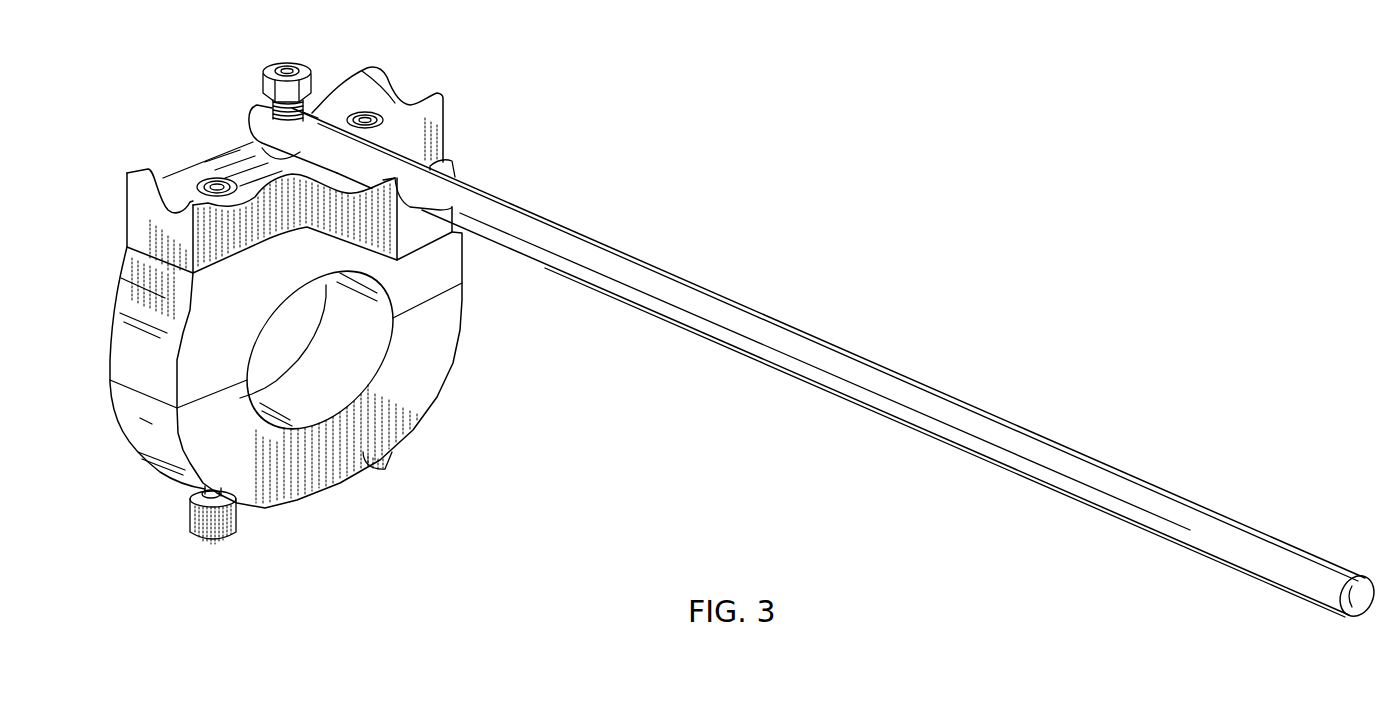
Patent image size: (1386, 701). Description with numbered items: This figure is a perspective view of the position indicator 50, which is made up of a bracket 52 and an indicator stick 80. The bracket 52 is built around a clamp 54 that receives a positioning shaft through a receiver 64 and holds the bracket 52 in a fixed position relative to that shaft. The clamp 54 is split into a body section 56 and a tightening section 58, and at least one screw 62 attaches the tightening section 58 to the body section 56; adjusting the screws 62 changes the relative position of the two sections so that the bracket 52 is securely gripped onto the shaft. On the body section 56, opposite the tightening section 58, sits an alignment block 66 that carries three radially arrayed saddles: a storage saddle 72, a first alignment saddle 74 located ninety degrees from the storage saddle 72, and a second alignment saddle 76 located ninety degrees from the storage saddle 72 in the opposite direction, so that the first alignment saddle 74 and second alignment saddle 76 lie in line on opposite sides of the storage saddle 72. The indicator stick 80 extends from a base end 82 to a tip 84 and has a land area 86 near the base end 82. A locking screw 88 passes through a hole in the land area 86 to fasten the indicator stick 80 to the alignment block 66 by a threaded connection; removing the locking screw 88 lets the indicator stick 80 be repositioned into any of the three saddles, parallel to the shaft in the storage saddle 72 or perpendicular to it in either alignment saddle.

The position indicator 50 is at (874, 199).
The bracket 52 is at (455, 170).
The clamp 54 is at (430, 348).
The body section 56 is at (120, 328).
The tightening section 58 is at (140, 437).
The screw 62 is at (385, 456).
The receiver 64 is at (325, 346).
The alignment block 66 is at (441, 121).
The storage saddle 72 is at (385, 232).
The first alignment saddle 74 is at (145, 231).
The second alignment saddle 76 is at (395, 95).
The indicator stick 80 is at (1046, 400).
The base end 82 is at (252, 112).
The tip 84 is at (1368, 597).
The land area 86 is at (306, 112).
The locking screw 88 is at (293, 62).